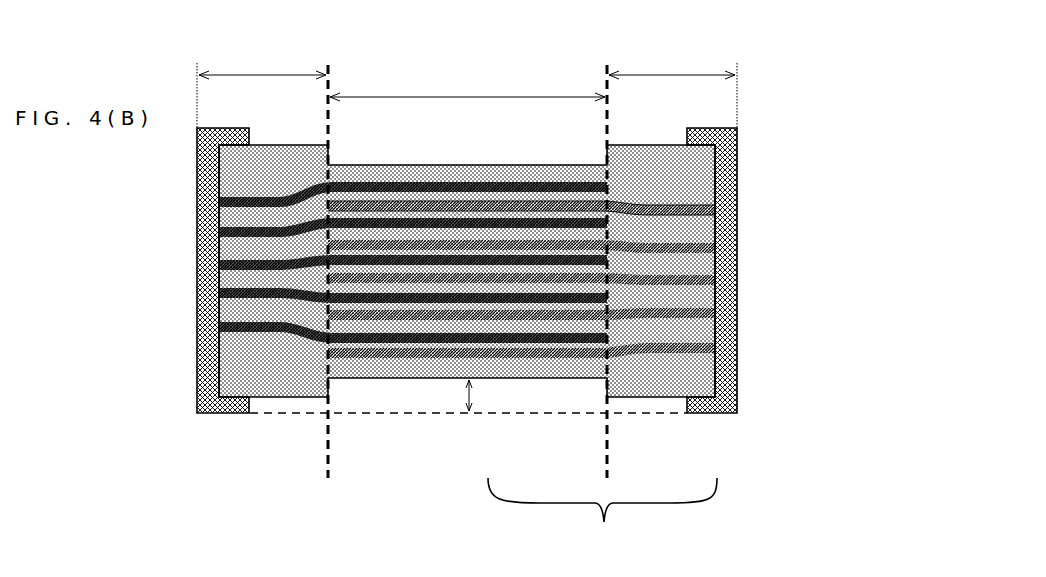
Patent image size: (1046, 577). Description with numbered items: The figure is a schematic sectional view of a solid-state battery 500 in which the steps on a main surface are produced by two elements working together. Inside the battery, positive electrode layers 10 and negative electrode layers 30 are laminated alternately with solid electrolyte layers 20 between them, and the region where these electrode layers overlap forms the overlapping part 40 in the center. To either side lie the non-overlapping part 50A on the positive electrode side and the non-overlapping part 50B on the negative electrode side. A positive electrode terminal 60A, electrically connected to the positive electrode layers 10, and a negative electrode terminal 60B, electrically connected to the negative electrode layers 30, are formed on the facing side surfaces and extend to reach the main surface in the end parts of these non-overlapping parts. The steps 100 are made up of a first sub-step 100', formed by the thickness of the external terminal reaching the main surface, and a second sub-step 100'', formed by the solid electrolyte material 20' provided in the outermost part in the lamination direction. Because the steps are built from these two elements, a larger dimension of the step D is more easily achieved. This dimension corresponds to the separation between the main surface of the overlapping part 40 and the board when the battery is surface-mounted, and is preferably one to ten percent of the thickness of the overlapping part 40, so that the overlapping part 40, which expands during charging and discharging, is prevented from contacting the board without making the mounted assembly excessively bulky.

The solid-state battery 500 is at (513, 213).
The positive electrode layer 10 is at (705, 211).
The solid electrolyte layer 20 is at (705, 231).
The solid electrolyte material 20' is at (713, 385).
The negative electrode layer 30 is at (607, 262).
The positive electrode terminal 60A is at (730, 155).
The negative electrode terminal 60B is at (197, 188).
The step 100 is at (602, 515).
The first sub-step 100' is at (650, 426).
The second sub-step 100'' is at (467, 412).
The overlapping part 40 is at (467, 111).
The non-overlapping part on positive electrode side 50A is at (672, 88).
The non-overlapping part on negative electrode side 50B is at (262, 88).
The dimension of the step D is at (470, 393).